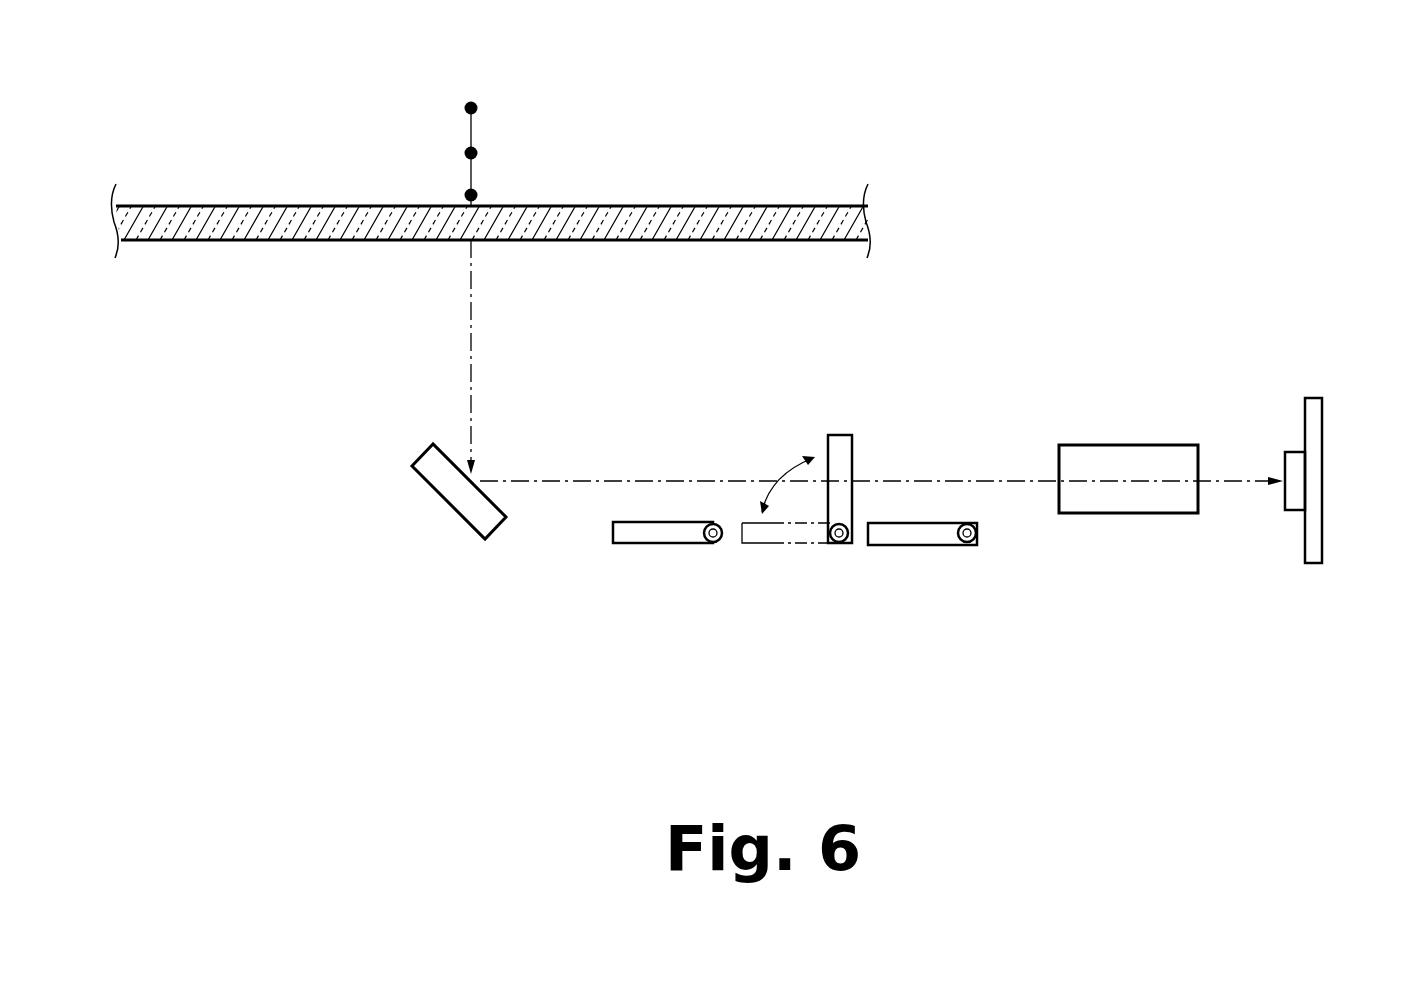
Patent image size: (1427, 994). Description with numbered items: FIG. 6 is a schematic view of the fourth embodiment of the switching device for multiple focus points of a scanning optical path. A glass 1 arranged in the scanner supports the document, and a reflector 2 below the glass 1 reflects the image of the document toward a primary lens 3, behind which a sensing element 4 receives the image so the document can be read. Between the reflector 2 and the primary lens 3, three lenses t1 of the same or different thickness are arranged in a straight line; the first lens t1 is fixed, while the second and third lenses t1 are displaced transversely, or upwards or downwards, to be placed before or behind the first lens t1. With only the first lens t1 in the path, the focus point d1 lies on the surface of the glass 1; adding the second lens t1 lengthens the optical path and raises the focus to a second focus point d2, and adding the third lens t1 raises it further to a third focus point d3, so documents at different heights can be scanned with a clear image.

The glass 1 is at (690, 215).
The reflector 2 is at (462, 498).
The primary lens 3 is at (1133, 460).
The sensing element 4 is at (1313, 478).
The lens t1 is at (670, 535).
The focus point d1 is at (478, 195).
The second focus point d2 is at (465, 153).
The focus point d3 is at (478, 107).